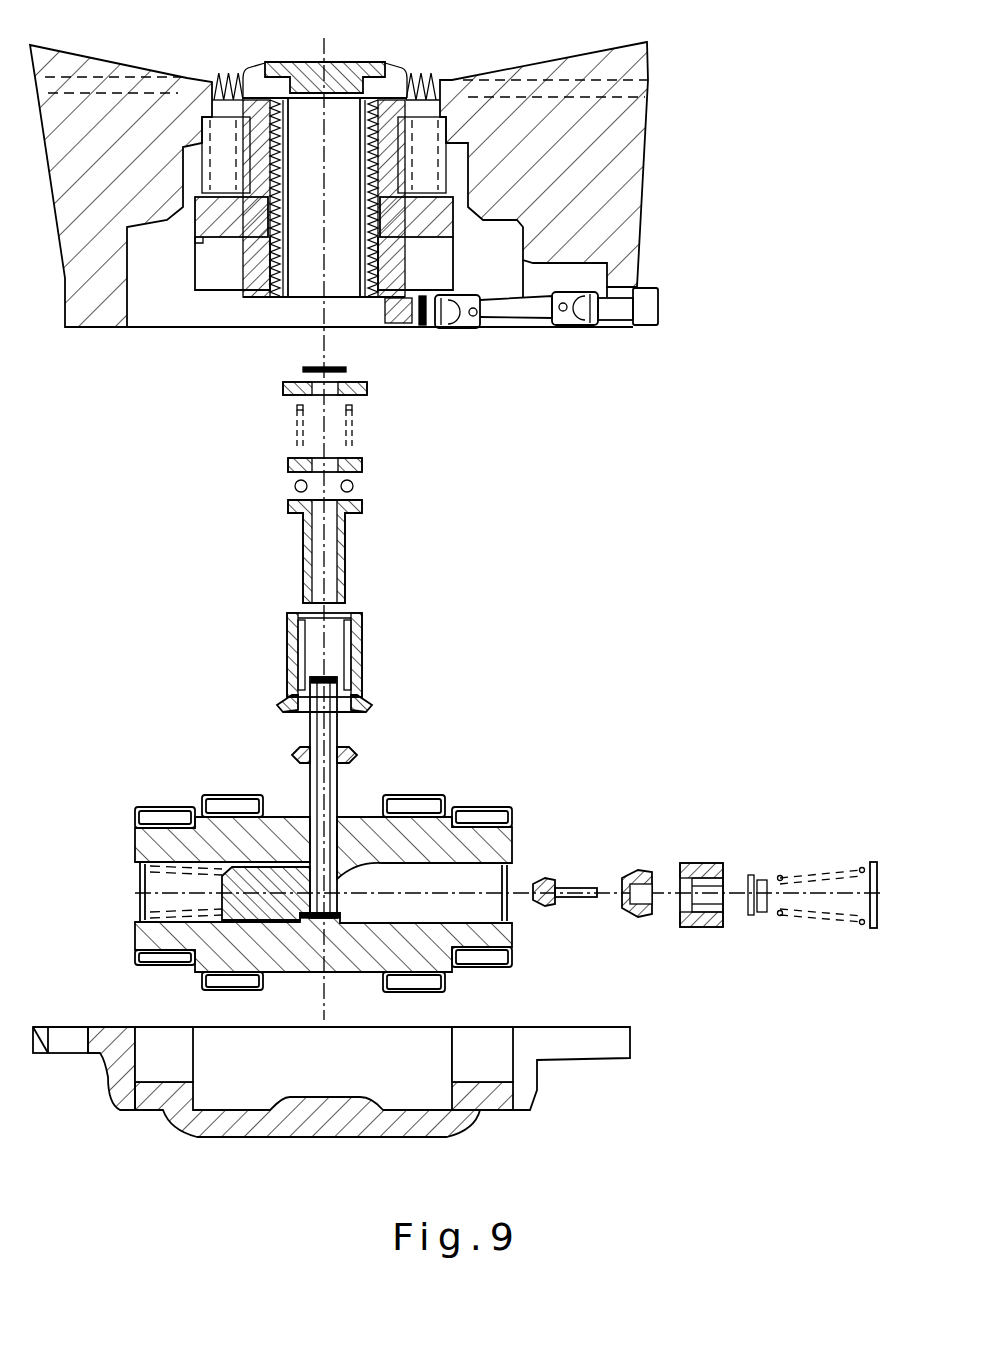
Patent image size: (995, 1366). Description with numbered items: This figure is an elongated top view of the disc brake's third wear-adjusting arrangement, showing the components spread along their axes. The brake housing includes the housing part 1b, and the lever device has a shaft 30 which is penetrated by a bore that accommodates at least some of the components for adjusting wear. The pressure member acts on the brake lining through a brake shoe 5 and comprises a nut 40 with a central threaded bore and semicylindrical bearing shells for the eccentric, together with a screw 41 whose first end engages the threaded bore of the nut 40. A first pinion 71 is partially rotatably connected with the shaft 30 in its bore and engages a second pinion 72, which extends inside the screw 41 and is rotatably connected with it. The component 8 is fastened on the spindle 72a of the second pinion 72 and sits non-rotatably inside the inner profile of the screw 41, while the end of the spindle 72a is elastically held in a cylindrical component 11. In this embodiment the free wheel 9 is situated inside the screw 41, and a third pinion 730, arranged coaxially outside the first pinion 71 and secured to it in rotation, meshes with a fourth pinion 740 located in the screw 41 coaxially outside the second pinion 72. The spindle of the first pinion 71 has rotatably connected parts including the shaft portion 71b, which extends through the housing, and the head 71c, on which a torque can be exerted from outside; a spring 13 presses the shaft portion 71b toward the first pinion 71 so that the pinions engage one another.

The brake shoe 5 is at (346, 62).
The nut 40 is at (440, 216).
The screw 41 is at (382, 258).
The shaft portion 71b is at (505, 315).
The head 71c is at (650, 322).
The component 8 is at (368, 390).
The free wheel 9 is at (362, 652).
The fourth pinion 740 is at (372, 702).
The second pinion 72 is at (357, 760).
The spindle 72a is at (320, 790).
The cylindrical component 11 is at (262, 893).
The shaft 30 is at (133, 933).
The first pinion 71 is at (545, 880).
The third pinion 730 is at (700, 863).
The spring 13 is at (792, 918).
The housing part 1b is at (112, 1100).